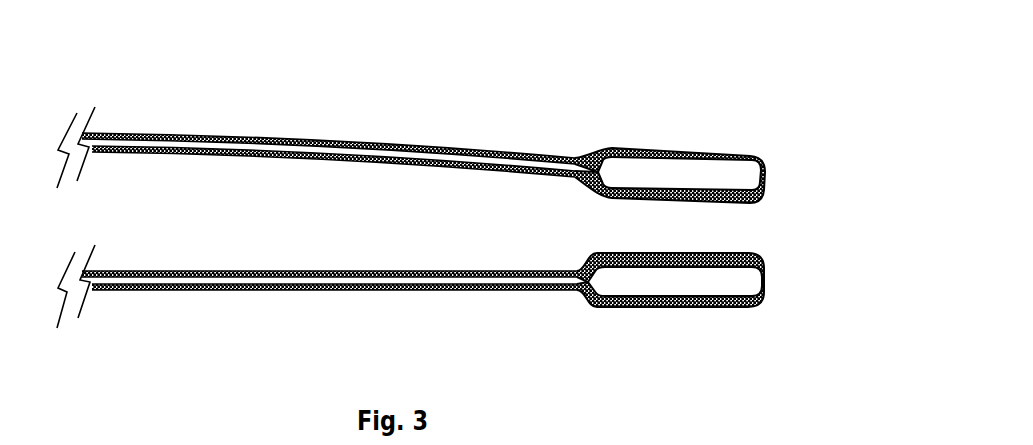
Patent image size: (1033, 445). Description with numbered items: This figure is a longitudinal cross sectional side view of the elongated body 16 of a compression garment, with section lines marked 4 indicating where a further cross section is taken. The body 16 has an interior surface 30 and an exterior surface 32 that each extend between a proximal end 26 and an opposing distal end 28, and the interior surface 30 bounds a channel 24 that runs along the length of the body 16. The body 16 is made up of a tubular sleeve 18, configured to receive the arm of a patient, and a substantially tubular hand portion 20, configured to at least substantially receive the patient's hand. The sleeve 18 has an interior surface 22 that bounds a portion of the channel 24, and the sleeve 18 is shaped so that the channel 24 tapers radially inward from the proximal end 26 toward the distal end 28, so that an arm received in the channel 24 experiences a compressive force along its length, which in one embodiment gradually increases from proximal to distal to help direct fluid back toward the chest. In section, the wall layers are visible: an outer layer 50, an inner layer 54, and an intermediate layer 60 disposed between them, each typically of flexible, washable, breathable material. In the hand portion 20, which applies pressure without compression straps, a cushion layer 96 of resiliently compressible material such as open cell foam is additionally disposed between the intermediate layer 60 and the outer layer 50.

The section line 4- 4 is at (297, 130).
The elongated body 16 is at (666, 58).
The tubular sleeve 18 is at (537, 152).
The hand portion 20 is at (682, 147).
The interior surface of sleeve 22 is at (132, 152).
The channel 24 is at (346, 235).
The proximal end 26 is at (121, 316).
The distal end 28 is at (657, 332).
The interior surface 30 is at (427, 268).
The exterior surface 32 is at (508, 292).
The outer layer 50 is at (743, 305).
The inner layer 54 is at (731, 254).
The intermediate layer 60 is at (743, 260).
The cushion layer 96 is at (748, 278).